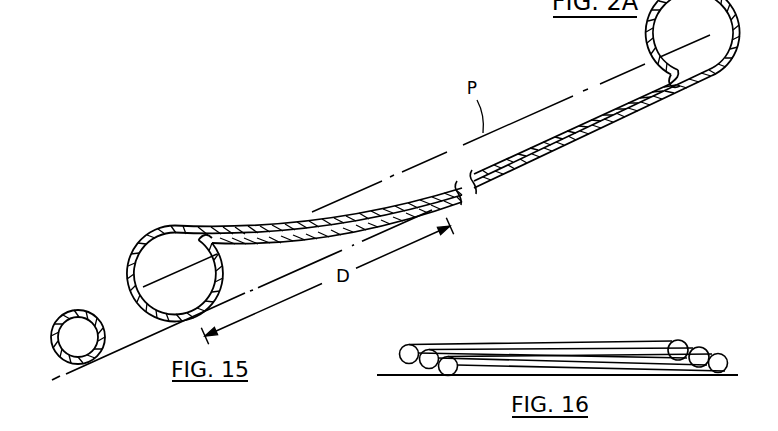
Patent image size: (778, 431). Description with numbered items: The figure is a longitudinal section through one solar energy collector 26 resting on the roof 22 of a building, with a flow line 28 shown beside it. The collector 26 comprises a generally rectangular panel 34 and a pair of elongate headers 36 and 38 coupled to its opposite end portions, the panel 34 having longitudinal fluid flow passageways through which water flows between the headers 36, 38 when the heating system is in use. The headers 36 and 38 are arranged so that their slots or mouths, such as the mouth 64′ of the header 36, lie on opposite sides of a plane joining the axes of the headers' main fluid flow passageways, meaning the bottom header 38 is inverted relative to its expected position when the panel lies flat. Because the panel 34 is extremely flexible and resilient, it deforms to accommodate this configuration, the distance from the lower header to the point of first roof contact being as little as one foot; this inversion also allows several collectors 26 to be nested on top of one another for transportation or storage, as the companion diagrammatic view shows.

In FIG. 15, the roof 22 is at (622, 120).
In FIG. 15, the collector 26 is at (141, 213).
In FIG. 16, the collector 26 is at (570, 356).
In FIG. 15, the flow line 28 is at (78, 309).
In FIG. 15, the panel 34 is at (411, 194).
In FIG. 15, the header 36 is at (643, 35).
In FIG. 15, the header 38 is at (180, 216).
In FIG. 15, the slot or mouth 64′ is at (628, 97).